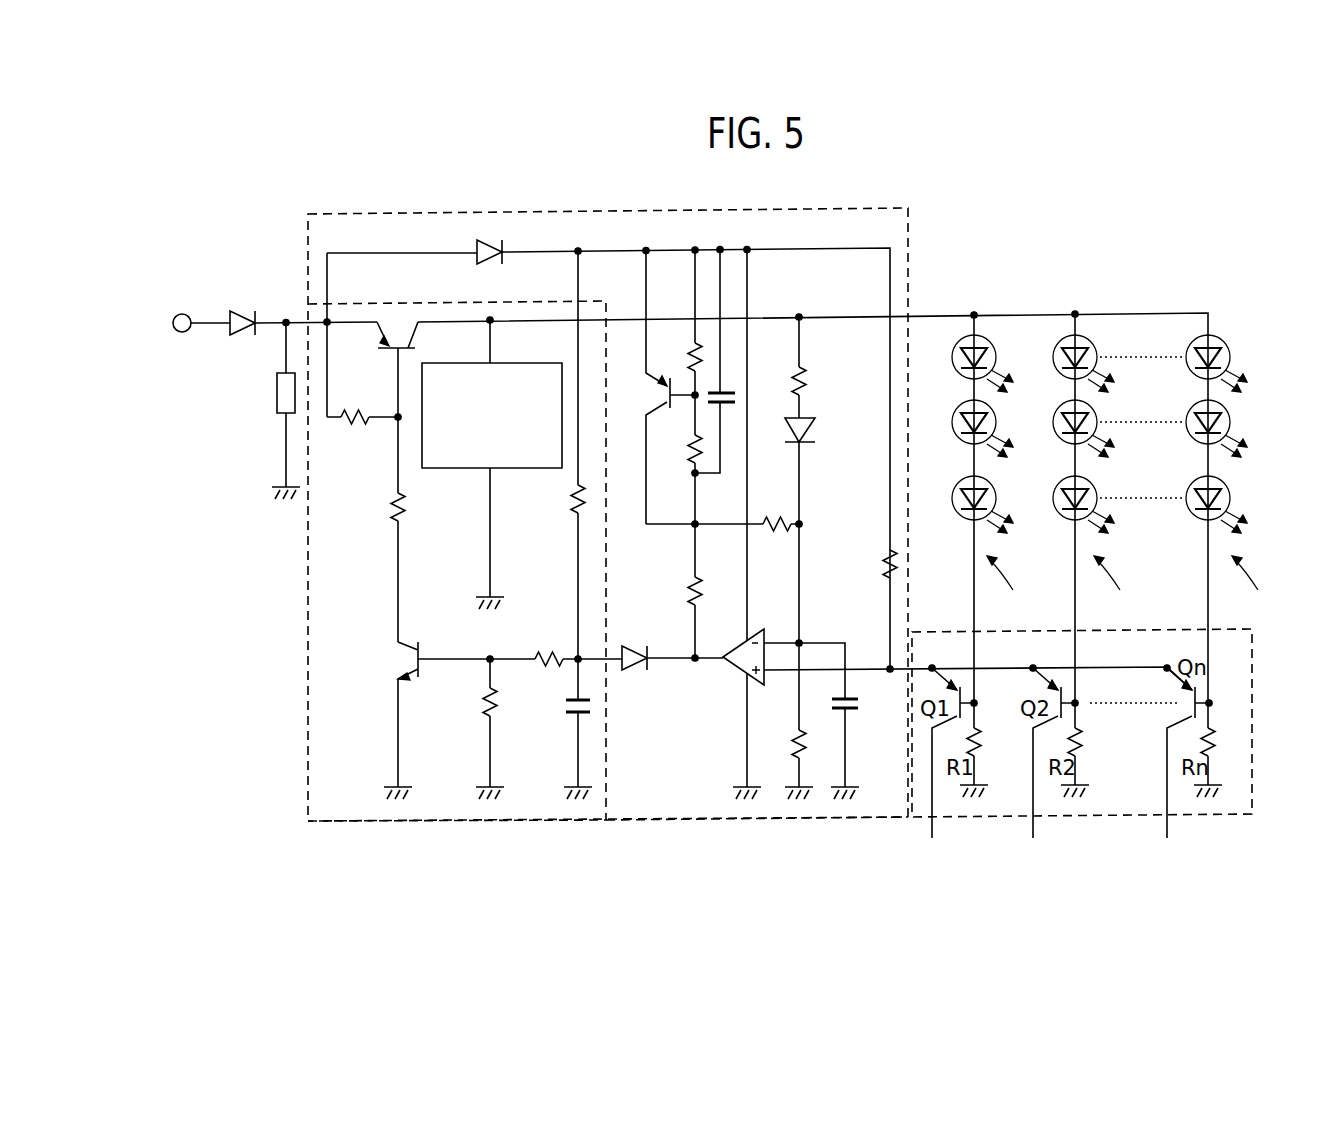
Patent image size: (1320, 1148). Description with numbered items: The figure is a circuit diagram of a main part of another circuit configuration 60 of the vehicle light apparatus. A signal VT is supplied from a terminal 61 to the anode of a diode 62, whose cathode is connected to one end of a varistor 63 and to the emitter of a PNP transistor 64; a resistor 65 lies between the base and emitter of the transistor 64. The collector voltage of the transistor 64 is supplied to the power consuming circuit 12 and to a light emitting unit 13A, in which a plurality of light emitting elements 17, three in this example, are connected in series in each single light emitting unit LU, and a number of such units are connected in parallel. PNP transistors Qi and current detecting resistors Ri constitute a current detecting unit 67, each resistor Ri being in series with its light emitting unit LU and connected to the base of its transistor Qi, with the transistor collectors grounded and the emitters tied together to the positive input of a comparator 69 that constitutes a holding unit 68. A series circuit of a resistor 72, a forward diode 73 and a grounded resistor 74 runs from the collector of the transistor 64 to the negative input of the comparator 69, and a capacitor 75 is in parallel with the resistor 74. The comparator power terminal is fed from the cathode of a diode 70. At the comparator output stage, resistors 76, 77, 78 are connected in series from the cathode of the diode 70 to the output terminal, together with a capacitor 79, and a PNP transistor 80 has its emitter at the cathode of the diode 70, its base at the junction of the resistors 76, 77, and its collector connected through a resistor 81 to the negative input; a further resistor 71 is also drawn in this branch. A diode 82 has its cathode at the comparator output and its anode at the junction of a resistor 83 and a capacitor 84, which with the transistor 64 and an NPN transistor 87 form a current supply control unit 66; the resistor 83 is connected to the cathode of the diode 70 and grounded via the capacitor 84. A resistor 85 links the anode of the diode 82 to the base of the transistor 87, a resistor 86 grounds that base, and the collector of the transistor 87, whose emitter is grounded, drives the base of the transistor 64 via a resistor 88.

The circuit configuration 60 is at (883, 181).
The terminal 61 is at (181, 333).
The diode 62 is at (238, 310).
The varistor 63 is at (277, 396).
The PNP transistor 64 is at (383, 333).
The resistor 65 is at (357, 428).
The current supply control unit 66 is at (367, 822).
The current detecting unit 67 is at (1042, 818).
The holding unit 68 is at (707, 822).
The comparator 69 is at (736, 672).
The diode 70 is at (472, 257).
The resistor 71 is at (880, 560).
The resistor 72 is at (812, 382).
The diode 73 is at (815, 427).
The resistor 74 is at (795, 735).
The capacitor 75 is at (852, 712).
The resistor 76 is at (688, 362).
The resistor 77 is at (690, 466).
The resistor 78 is at (688, 585).
The capacitor 79 is at (727, 410).
The PNP transistor 80 is at (661, 415).
The resistor 81 is at (768, 535).
The diode 82 is at (636, 671).
The resistor 83 is at (578, 512).
The capacitor 84 is at (572, 718).
The resistor 85 is at (541, 650).
The resistor 86 is at (483, 700).
The NPN transistor 87 is at (406, 648).
The resistor 88 is at (386, 505).
The power consuming circuit 12 is at (465, 470).
The light emitting unit 13A is at (1103, 471).
The light emitting element 17 is at (1190, 519).